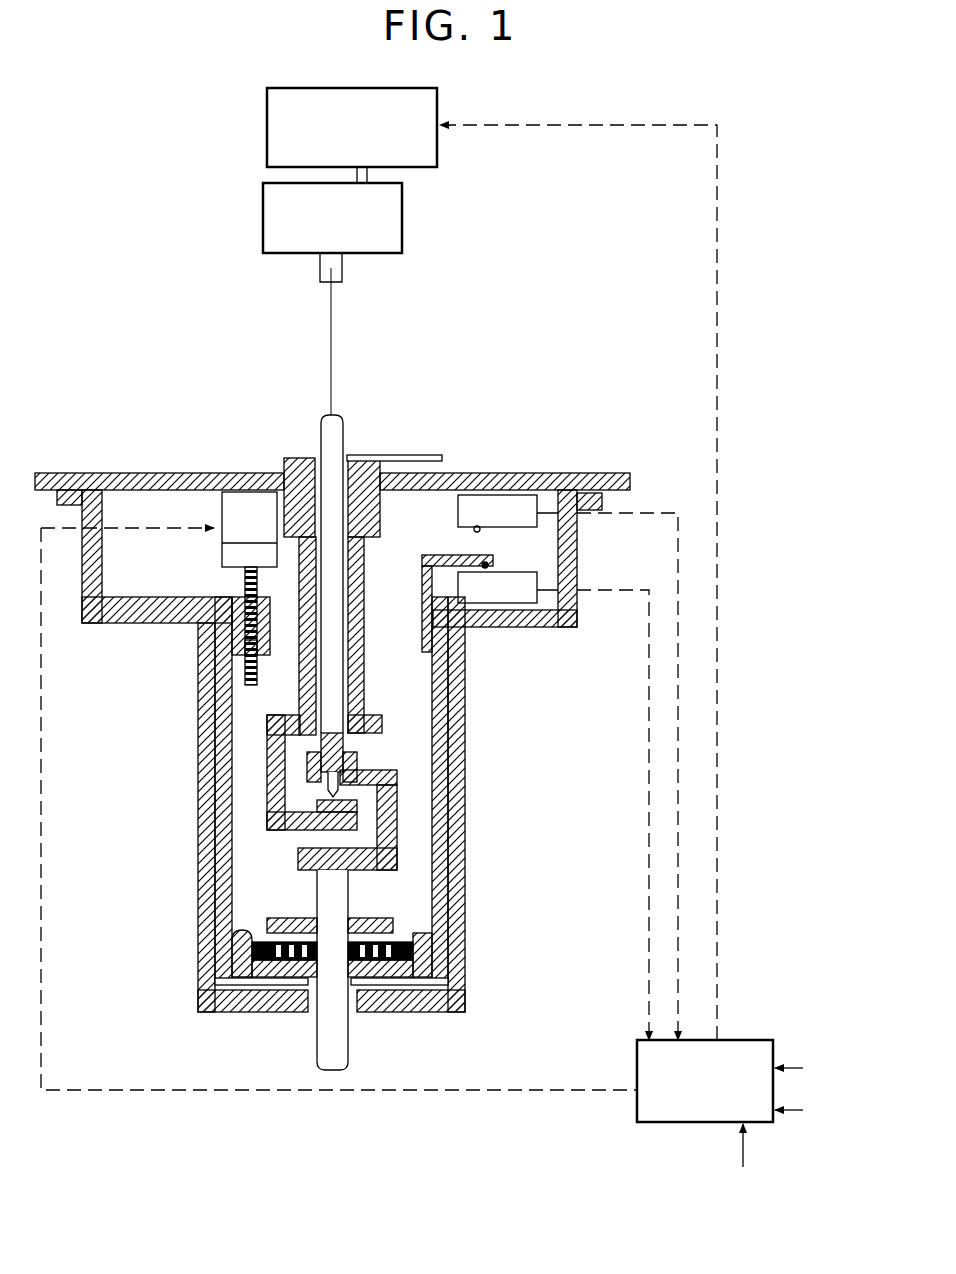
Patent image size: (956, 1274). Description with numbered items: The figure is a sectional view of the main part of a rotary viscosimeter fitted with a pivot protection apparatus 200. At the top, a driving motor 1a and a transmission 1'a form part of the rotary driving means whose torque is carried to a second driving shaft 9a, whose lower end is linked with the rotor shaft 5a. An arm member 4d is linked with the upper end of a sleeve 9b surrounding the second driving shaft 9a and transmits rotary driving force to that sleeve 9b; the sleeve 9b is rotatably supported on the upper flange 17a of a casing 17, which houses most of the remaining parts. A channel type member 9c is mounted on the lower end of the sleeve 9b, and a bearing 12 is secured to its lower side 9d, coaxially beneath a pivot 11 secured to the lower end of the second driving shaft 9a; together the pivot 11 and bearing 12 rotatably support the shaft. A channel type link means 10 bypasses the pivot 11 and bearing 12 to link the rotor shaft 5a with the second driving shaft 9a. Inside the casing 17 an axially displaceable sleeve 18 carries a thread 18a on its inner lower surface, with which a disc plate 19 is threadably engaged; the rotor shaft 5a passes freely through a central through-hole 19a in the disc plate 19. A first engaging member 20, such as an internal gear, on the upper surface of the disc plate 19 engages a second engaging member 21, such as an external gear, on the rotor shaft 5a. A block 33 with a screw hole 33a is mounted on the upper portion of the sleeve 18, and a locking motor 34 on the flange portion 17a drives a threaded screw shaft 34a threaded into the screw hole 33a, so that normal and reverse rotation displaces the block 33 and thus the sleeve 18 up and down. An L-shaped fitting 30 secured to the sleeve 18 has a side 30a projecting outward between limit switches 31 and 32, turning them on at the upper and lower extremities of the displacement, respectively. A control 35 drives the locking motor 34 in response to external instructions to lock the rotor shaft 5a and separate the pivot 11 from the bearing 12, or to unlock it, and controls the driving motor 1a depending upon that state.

The driving motor 1a is at (437, 148).
The transmission 1'a is at (369, 218).
The second driving shaft 9a is at (338, 418).
The sleeve 9b is at (364, 575).
The channel type member 9c is at (268, 772).
The shaft end pin 9d is at (326, 785).
The arm member 4d is at (418, 454).
The upper flange 17a is at (175, 473).
The casing 17 is at (466, 878).
The sleeve 18 is at (443, 818).
The thread 18a is at (432, 948).
The disc plate 19 is at (275, 978).
The through-hole 19a is at (302, 978).
The first engaging member 20 is at (235, 930).
The second engaging member 21 is at (288, 918).
The channel type link means 10 is at (380, 870).
The pivot 11 is at (352, 778).
The bearing 12 is at (292, 838).
The rotary shaft 5a is at (348, 1048).
The L-shaped fitting 30 is at (442, 553).
The side of L angle fitting 30a is at (542, 560).
The limit switch 31 is at (520, 500).
The limit switch 32 is at (520, 598).
The block 33 is at (235, 636).
The screw hole 33a is at (245, 672).
The locking motor 34 is at (242, 503).
The threaded screw shaft 34a is at (245, 686).
The pivot protection apparatus 200 is at (467, 735).
The control 35 is at (650, 1122).